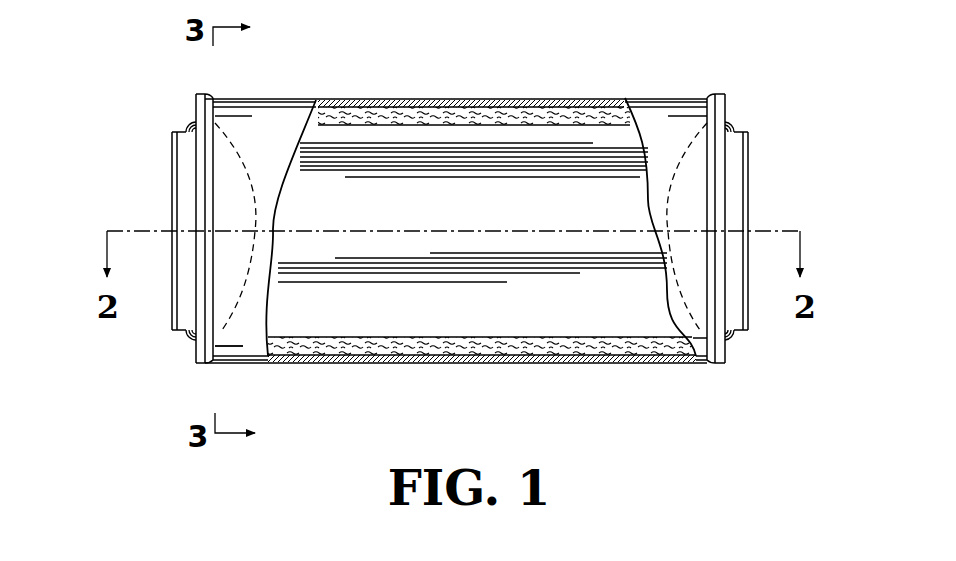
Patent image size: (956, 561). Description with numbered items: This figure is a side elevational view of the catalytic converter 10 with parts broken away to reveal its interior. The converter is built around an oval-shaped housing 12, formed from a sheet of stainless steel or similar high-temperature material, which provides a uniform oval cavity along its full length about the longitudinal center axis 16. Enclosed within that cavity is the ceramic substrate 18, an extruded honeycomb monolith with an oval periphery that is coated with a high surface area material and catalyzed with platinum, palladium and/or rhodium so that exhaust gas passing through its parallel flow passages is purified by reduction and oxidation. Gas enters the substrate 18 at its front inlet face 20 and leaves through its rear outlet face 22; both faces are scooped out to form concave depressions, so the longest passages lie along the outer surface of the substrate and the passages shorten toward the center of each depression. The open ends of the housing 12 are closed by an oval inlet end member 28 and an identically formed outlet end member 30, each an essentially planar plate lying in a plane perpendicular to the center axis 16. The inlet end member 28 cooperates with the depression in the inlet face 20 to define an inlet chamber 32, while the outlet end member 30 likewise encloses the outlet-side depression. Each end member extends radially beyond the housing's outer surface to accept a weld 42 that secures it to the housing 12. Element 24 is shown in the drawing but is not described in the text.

The catalytic converter 10 is at (642, 82).
The housing 12 is at (289, 92).
The longitudinal center axis 16 is at (173, 226).
The substrate 18 is at (369, 342).
The front inlet face 20 is at (237, 169).
The rear outlet face 22 is at (690, 163).
The outer shell 24 is at (510, 98).
The inlet end member 28 is at (193, 340).
The outlet end member 30 is at (735, 332).
The inlet chamber 32 is at (228, 263).
The weld 42 is at (213, 97).